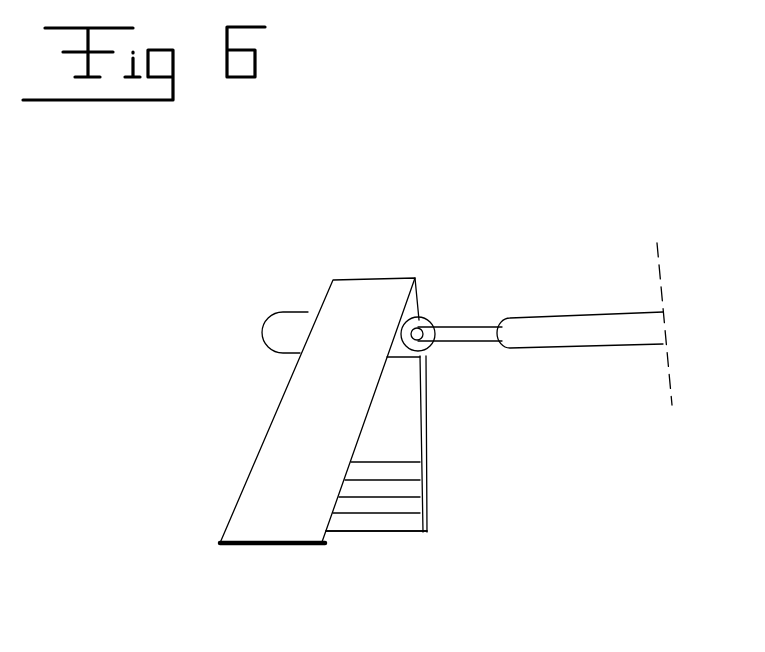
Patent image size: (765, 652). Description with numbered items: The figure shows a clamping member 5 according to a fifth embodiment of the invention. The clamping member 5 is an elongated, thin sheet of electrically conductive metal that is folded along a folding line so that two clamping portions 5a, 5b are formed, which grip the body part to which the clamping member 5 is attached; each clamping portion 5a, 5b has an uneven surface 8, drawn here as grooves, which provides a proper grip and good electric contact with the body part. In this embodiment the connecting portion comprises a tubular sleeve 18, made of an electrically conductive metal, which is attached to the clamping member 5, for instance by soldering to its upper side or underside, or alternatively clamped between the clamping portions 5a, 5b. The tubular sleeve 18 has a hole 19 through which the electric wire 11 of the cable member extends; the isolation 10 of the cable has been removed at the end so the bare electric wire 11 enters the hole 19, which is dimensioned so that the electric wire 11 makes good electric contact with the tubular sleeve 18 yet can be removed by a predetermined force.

The clamping member 5 is at (226, 392).
The clamping portion 5a is at (240, 502).
The clamping portion 5b is at (420, 483).
The uneven surface 8 is at (392, 520).
The isolation 10 is at (577, 330).
The electric wire 11 is at (460, 330).
The tubular sleeve 18 is at (297, 320).
The hole 19 is at (423, 357).